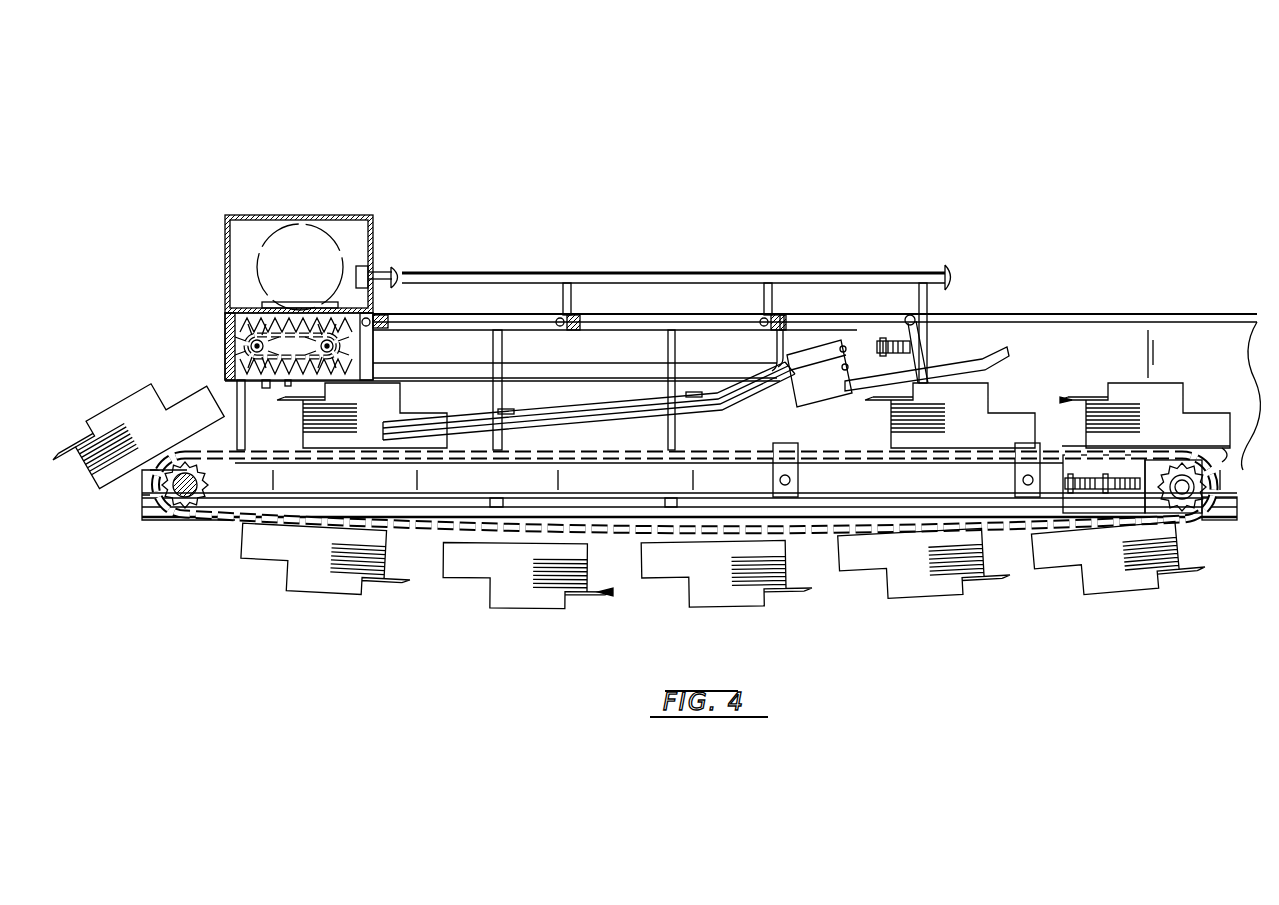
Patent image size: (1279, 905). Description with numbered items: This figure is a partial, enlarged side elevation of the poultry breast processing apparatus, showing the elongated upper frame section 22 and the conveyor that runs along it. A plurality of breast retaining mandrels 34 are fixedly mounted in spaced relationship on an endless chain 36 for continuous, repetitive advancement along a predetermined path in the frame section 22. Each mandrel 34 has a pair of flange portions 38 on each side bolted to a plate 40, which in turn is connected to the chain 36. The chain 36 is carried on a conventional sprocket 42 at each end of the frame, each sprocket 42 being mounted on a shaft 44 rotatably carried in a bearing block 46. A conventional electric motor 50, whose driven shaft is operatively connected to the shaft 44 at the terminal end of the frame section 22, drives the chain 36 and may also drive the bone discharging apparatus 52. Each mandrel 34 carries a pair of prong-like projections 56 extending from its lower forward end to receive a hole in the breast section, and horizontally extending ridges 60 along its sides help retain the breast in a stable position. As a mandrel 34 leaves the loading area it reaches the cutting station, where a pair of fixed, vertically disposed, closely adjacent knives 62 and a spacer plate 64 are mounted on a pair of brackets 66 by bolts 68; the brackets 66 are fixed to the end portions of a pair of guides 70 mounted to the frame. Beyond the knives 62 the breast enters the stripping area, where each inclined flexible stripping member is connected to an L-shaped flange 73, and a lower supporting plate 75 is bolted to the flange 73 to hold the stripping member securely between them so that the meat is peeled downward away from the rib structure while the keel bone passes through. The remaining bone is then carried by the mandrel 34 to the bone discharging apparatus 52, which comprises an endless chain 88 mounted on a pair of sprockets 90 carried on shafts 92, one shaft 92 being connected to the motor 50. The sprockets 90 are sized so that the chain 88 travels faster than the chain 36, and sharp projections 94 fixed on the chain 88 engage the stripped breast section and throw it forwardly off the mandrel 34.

The upper frame section 22 is at (1170, 312).
The breast retaining mandrel 34 is at (143, 418).
The endless chain 36 is at (822, 533).
The flange portion 38 is at (1187, 445).
The plate 40 is at (1226, 455).
The sprocket 42 is at (208, 500).
The shaft 44 is at (184, 500).
The bearing block 46 is at (142, 497).
The electric motor 50 is at (333, 210).
The bone discharging apparatus 52 is at (214, 326).
The prong-like projections 56 is at (600, 593).
The horizontally extending ridges 60 is at (948, 563).
The knives 62 is at (827, 392).
The spacer plate 64 is at (808, 347).
The bracket 66 is at (848, 345).
The bolts 68 is at (853, 345).
The guides 70 is at (950, 366).
The L-shaped flange 73 is at (768, 350).
The lower supporting plate 75 is at (752, 395).
The endless chain 88 is at (243, 344).
The sprockets 90 is at (336, 345).
The shafts 92 is at (246, 352).
The sharp projections 94 is at (382, 316).